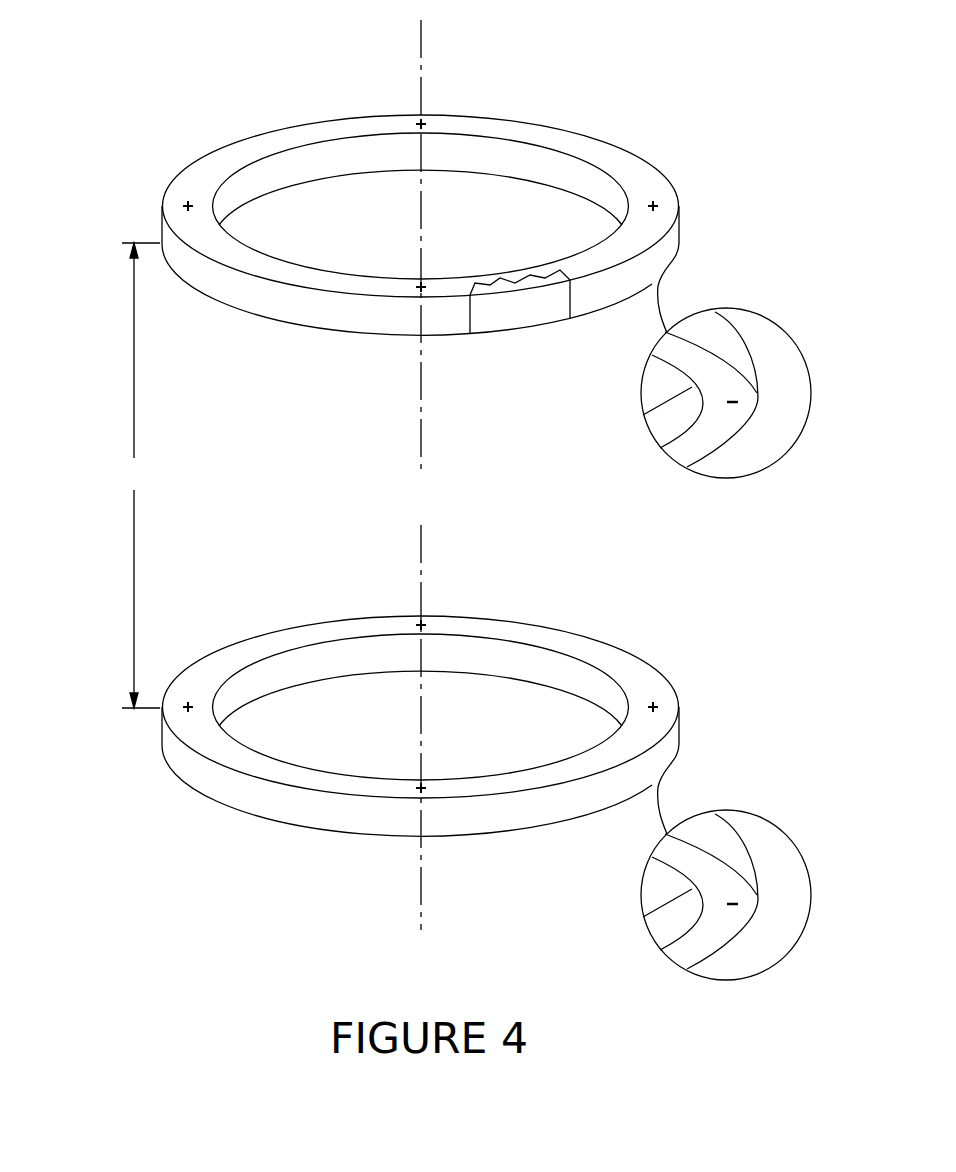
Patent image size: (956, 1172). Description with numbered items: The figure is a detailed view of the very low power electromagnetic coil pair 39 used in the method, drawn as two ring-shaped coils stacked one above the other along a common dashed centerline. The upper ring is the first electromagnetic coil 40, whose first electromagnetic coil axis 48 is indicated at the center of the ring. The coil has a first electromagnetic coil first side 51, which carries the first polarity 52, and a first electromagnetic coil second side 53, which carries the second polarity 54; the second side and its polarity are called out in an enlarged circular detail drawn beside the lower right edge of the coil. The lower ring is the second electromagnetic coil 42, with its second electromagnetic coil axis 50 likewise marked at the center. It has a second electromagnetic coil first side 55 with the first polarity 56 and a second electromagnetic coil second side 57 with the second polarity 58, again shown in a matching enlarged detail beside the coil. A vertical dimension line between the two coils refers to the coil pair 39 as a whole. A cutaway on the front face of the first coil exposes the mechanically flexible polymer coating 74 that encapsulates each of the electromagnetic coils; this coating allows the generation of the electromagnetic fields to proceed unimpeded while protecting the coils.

The very low power electromagnetic coil pair 39 is at (140, 475).
The first electromagnetic coil 40 is at (486, 249).
The second electromagnetic coil 42 is at (486, 752).
The first electromagnetic coil axis 48 is at (424, 203).
The second electromagnetic coil axis 50 is at (424, 704).
The first electromagnetic coil first side 51 is at (635, 163).
The first polarity 52 is at (656, 202).
The first electromagnetic coil second side 53 is at (715, 437).
The second polarity 54 is at (733, 404).
The second electromagnetic coil first side 55 is at (635, 664).
The first polarity 56 is at (656, 703).
The second electromagnetic coil second side 57 is at (715, 939).
The second polarity 58 is at (733, 906).
The mechanically flexible polymer coating 74 is at (571, 316).